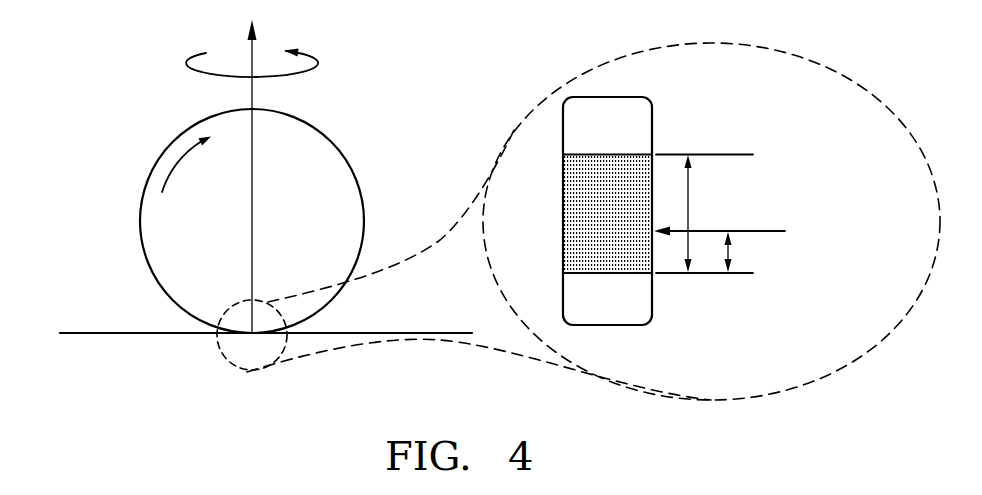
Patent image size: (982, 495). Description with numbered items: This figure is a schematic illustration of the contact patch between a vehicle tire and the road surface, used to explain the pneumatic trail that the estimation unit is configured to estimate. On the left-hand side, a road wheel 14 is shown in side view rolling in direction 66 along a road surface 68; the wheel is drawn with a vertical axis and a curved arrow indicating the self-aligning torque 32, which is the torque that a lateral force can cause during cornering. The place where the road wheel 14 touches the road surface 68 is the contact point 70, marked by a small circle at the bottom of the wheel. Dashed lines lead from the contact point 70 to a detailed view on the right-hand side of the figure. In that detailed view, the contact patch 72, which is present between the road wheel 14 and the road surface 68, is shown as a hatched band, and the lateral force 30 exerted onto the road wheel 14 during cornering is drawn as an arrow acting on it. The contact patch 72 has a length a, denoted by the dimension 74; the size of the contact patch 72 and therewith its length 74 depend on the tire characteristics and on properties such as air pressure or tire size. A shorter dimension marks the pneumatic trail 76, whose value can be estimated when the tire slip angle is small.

The road wheel 14 is at (141, 240).
The lateral force 30 is at (750, 231).
The self-aligning torque 32 is at (196, 52).
The rolling direction 66 is at (183, 157).
The road surface 68 is at (110, 332).
The contact point 70 is at (246, 344).
The contact patch 72 is at (573, 188).
The length of the contact patch 74 is at (690, 188).
The pneumatic trail 76 is at (733, 252).